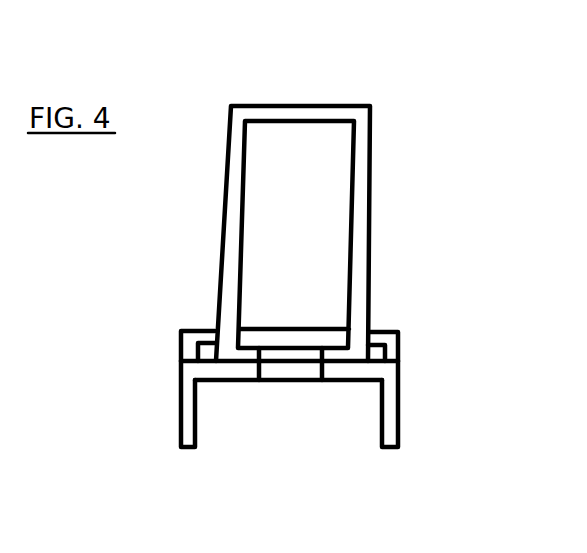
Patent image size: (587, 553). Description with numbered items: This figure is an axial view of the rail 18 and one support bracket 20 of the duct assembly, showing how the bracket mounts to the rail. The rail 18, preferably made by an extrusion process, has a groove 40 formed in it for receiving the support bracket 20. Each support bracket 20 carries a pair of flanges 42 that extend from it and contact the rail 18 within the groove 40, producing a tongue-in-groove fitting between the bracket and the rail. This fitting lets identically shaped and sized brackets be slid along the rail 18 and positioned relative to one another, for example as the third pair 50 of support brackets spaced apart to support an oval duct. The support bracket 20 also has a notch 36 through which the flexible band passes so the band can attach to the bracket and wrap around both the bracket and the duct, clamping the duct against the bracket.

The rail 18 is at (176, 449).
The support bracket 20 is at (228, 106).
The notch 36 is at (258, 358).
The groove 40 is at (213, 336).
The flange 42 is at (182, 343).
The third pair of support brackets 50 is at (322, 368).